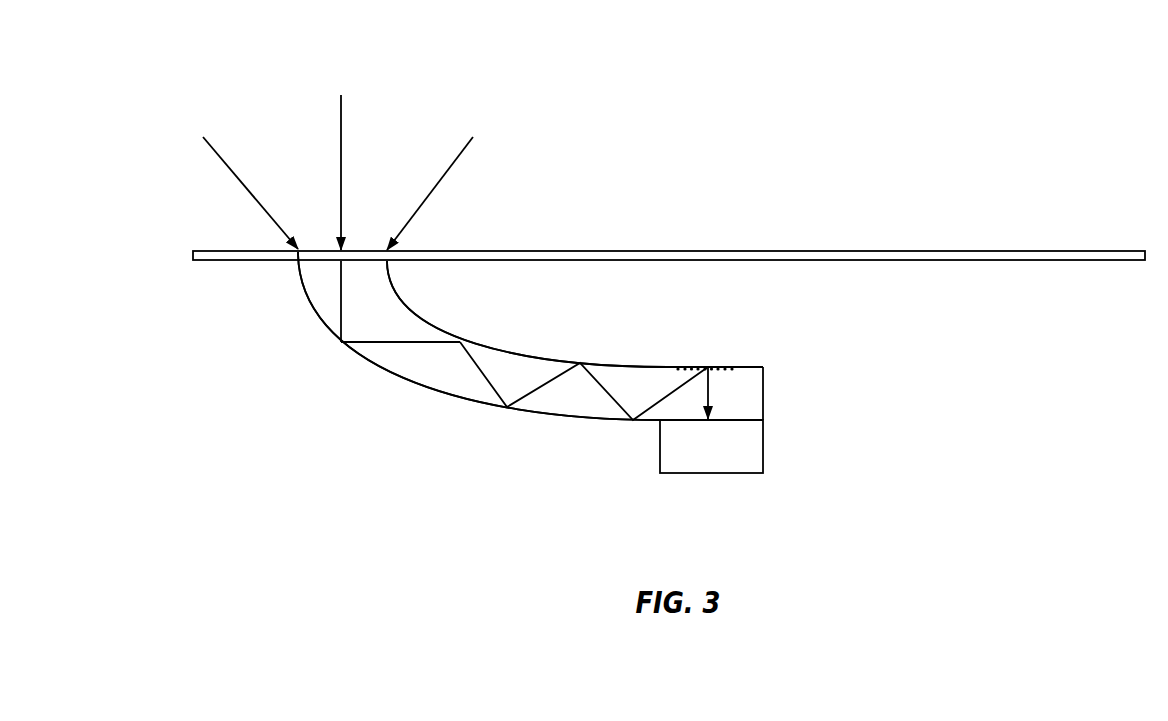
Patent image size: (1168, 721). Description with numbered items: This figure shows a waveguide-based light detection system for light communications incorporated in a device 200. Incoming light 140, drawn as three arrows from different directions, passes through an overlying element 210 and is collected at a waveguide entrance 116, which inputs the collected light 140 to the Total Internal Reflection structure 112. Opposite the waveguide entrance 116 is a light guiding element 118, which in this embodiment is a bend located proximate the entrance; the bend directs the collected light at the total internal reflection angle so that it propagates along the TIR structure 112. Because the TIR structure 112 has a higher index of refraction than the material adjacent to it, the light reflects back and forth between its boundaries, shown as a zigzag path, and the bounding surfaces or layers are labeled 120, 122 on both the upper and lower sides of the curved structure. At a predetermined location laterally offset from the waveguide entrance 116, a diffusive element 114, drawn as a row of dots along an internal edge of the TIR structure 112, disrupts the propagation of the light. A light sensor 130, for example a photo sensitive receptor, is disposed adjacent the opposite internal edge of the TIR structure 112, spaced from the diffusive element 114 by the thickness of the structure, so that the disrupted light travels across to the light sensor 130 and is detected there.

The Total Internal Reflection structure 112 is at (563, 393).
The diffusive element 114 is at (718, 366).
The waveguide entrance 116 is at (318, 268).
The light guiding element 118 is at (330, 347).
The waveguide surface 120 is at (520, 323).
The waveguide surface 122 is at (400, 462).
The light sensor 130 is at (697, 467).
The light 140 is at (402, 95).
The device 200 is at (962, 375).
The cover plate 210 is at (975, 251).